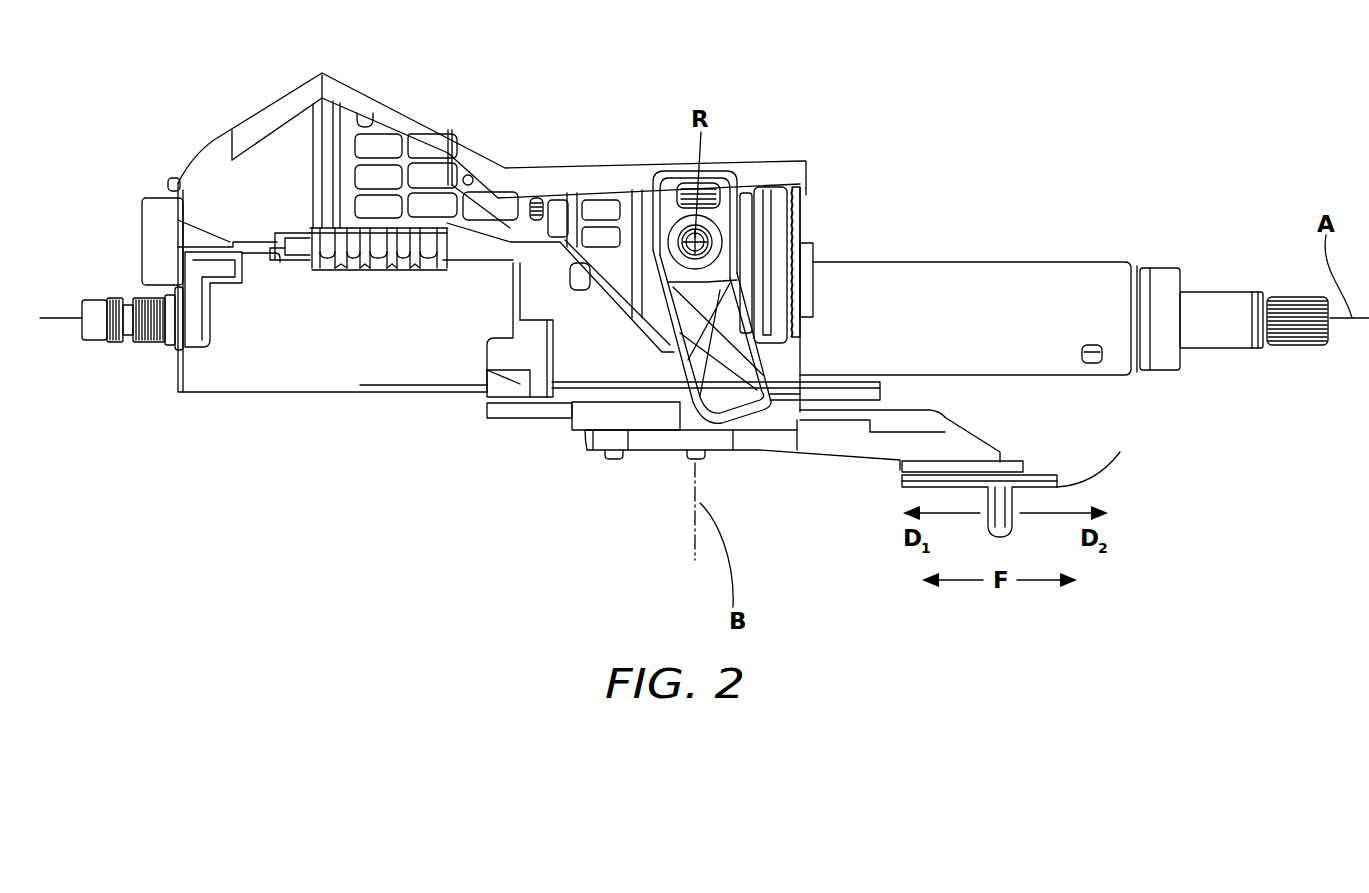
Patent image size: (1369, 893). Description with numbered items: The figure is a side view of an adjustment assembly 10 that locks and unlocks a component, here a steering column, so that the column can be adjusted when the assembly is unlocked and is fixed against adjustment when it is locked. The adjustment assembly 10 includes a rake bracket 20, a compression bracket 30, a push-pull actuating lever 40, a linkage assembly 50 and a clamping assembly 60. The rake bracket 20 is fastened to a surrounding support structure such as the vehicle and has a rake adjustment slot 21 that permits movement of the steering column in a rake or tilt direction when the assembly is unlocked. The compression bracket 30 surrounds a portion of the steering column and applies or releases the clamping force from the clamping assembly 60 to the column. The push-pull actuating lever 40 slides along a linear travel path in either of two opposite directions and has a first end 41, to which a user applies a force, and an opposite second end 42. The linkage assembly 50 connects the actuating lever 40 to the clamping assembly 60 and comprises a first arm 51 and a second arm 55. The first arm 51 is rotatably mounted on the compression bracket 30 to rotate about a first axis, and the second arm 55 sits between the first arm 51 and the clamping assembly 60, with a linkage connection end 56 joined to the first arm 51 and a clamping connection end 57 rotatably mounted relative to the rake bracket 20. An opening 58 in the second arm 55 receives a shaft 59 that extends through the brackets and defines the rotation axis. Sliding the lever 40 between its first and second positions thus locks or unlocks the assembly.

The adjustment assembly 10 is at (913, 104).
The rake bracket 20 is at (510, 168).
The rake adjustment slot 21 is at (723, 192).
The compression bracket 30 is at (322, 393).
The push-pull actuating lever 40 is at (868, 457).
The first end 41 is at (1097, 477).
The second end 42 is at (577, 432).
The linkage assembly 50 is at (742, 508).
The first arm 51 is at (653, 453).
The second arm 55 is at (655, 298).
The linkage connection end 56 is at (693, 420).
The clamping connection end 57 is at (657, 216).
The opening 58 is at (717, 242).
The shaft 59 is at (703, 250).
The clamping assembly 60 is at (713, 225).